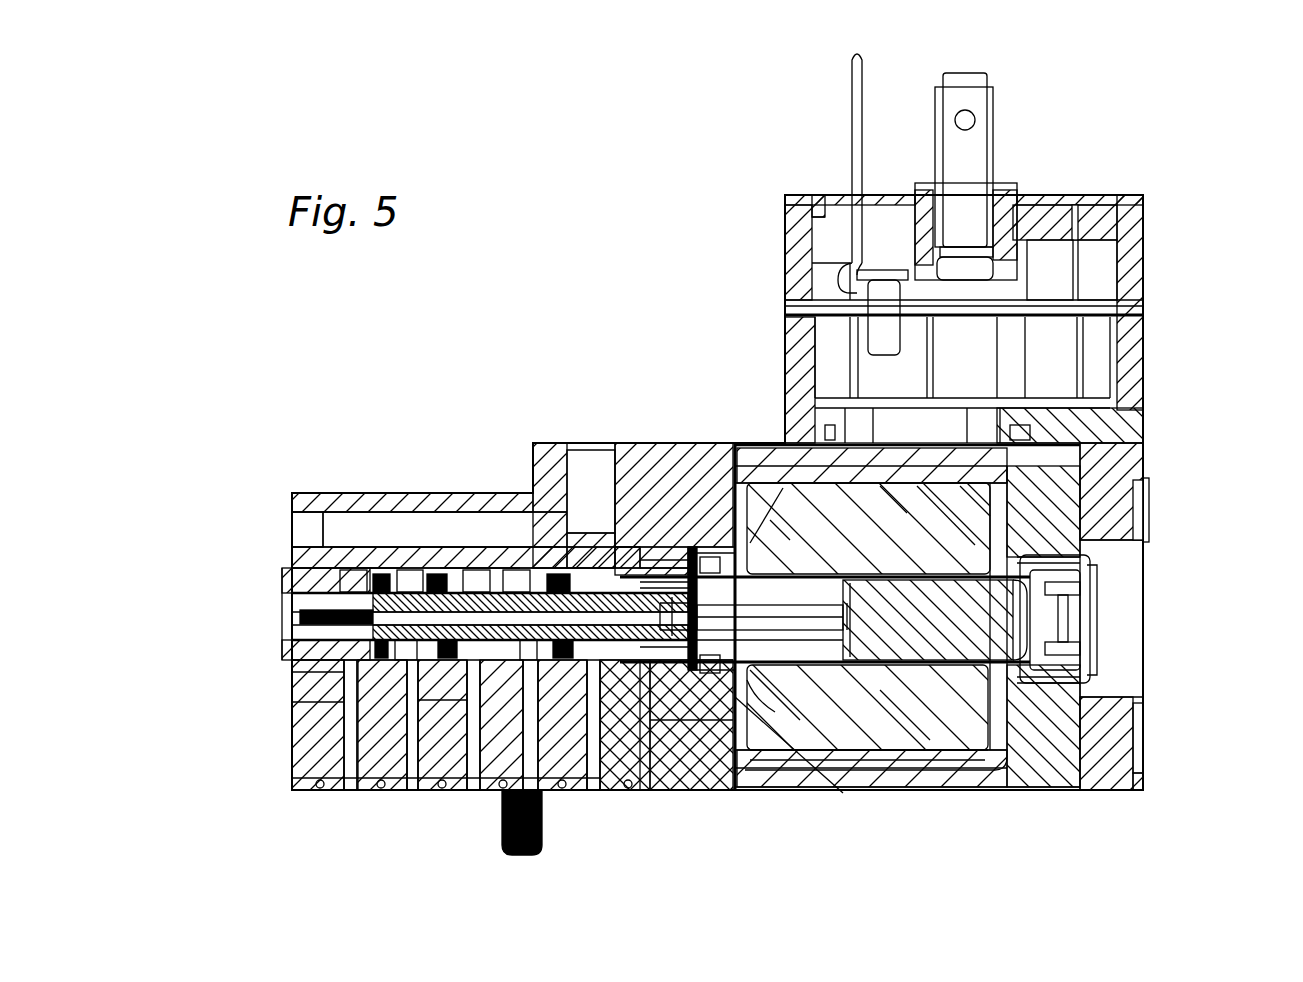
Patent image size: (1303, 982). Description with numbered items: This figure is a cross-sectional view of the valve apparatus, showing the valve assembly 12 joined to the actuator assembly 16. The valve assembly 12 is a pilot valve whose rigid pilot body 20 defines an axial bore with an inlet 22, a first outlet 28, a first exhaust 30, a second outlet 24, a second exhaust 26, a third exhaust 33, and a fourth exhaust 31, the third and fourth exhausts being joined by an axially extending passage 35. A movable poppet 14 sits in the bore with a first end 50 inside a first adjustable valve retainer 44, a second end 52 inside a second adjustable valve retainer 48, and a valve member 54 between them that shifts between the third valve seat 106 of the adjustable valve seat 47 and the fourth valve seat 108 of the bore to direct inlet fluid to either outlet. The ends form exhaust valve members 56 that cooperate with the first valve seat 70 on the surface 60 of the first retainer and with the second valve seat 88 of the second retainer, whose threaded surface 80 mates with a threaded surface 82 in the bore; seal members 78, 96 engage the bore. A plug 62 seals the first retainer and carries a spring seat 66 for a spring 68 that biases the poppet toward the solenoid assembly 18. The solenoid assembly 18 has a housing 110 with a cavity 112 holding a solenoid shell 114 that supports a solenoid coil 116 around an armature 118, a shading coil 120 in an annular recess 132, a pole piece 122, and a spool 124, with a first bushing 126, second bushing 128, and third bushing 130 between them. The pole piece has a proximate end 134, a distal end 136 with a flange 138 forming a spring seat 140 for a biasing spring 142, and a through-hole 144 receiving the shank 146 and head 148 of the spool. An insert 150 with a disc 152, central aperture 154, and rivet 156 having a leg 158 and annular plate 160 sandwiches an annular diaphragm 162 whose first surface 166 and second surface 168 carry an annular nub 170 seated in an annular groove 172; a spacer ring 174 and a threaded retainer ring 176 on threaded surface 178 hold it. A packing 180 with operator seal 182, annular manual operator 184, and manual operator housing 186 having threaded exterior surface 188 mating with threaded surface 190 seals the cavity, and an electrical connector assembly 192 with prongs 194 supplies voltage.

The valve assembly 12 is at (688, 795).
The poppet 14 is at (520, 600).
The actuator assembly 16 is at (1150, 360).
The solenoid assembly 18 is at (978, 792).
The pilot body 20 is at (672, 762).
The inlet 22 is at (464, 792).
The second outlet 24 is at (548, 800).
The second exhaust 26 is at (545, 775).
The first outlet 28 is at (355, 792).
The first exhaust 30 is at (337, 752).
The fourth exhaust 31 is at (592, 445).
The third exhaust 33 is at (352, 552).
The passage 35 is at (392, 526).
The first adjustable valve retainer 44 is at (283, 661).
The adjustable valve seat 47 is at (398, 792).
The second adjustable valve retainer 48 is at (548, 690).
The first end 50 is at (298, 673).
The second end 52 is at (643, 522).
The valve member 54 is at (480, 568).
The exhaust valve members 56 is at (298, 703).
The surface 60 is at (410, 585).
The plug 62 is at (283, 625).
The spring seat 66 is at (285, 600).
The spring 68 is at (290, 598).
The first valve seat 70 is at (333, 795).
The seal member 78 is at (396, 590).
The threaded surface 80 is at (637, 445).
The threaded surface 82 is at (546, 725).
The second valve seat 88 is at (442, 692).
The seal member 96 is at (535, 600).
The third valve seat 106 is at (445, 585).
The fourth valve seat 108 is at (436, 792).
The housing 110 is at (1030, 793).
The cavity 112 is at (880, 790).
The solenoid shell 114 is at (983, 476).
The solenoid coil 116 is at (960, 740).
The armature 118 is at (1007, 630).
The shading coil 120 is at (863, 590).
The pole piece 122 is at (770, 642).
The spool 124 is at (742, 617).
The first bushing 126 is at (868, 528).
The second bushing 128 is at (961, 527).
The third bushing 130 is at (935, 515).
The annular recess 132 is at (883, 665).
The proximate end 134 is at (806, 693).
The distal end 136 is at (803, 515).
The flange 138 is at (780, 530).
The spring seat 140 is at (747, 678).
The biasing spring 142 is at (747, 697).
The through-hole 144 is at (874, 526).
The shank 146 is at (860, 625).
The head 148 is at (712, 592).
The insert 150 is at (612, 795).
The disc 152 is at (660, 565).
The central aperture 154 is at (588, 792).
The rivet 156 is at (676, 618).
The leg 158 is at (665, 590).
The annular plate 160 is at (680, 565).
The annular diaphragm 162 is at (733, 697).
The first surface 166 is at (662, 580).
The second surface 168 is at (655, 792).
The annular nub 170 is at (660, 575).
The annular groove 172 is at (656, 792).
The spacer ring 174 is at (733, 792).
The threaded retainer ring 176 is at (873, 768).
The threaded surface 178 is at (668, 600).
The packing 180 is at (1140, 747).
The operator seal 182 is at (1093, 623).
The annular manual operator 184 is at (1045, 617).
The manual operator housing 186 is at (1083, 578).
The threaded exterior surface 188 is at (1083, 530).
The threaded surface 190 is at (1075, 530).
The electrical connector assembly 192 is at (1130, 405).
The prongs 194 is at (862, 100).